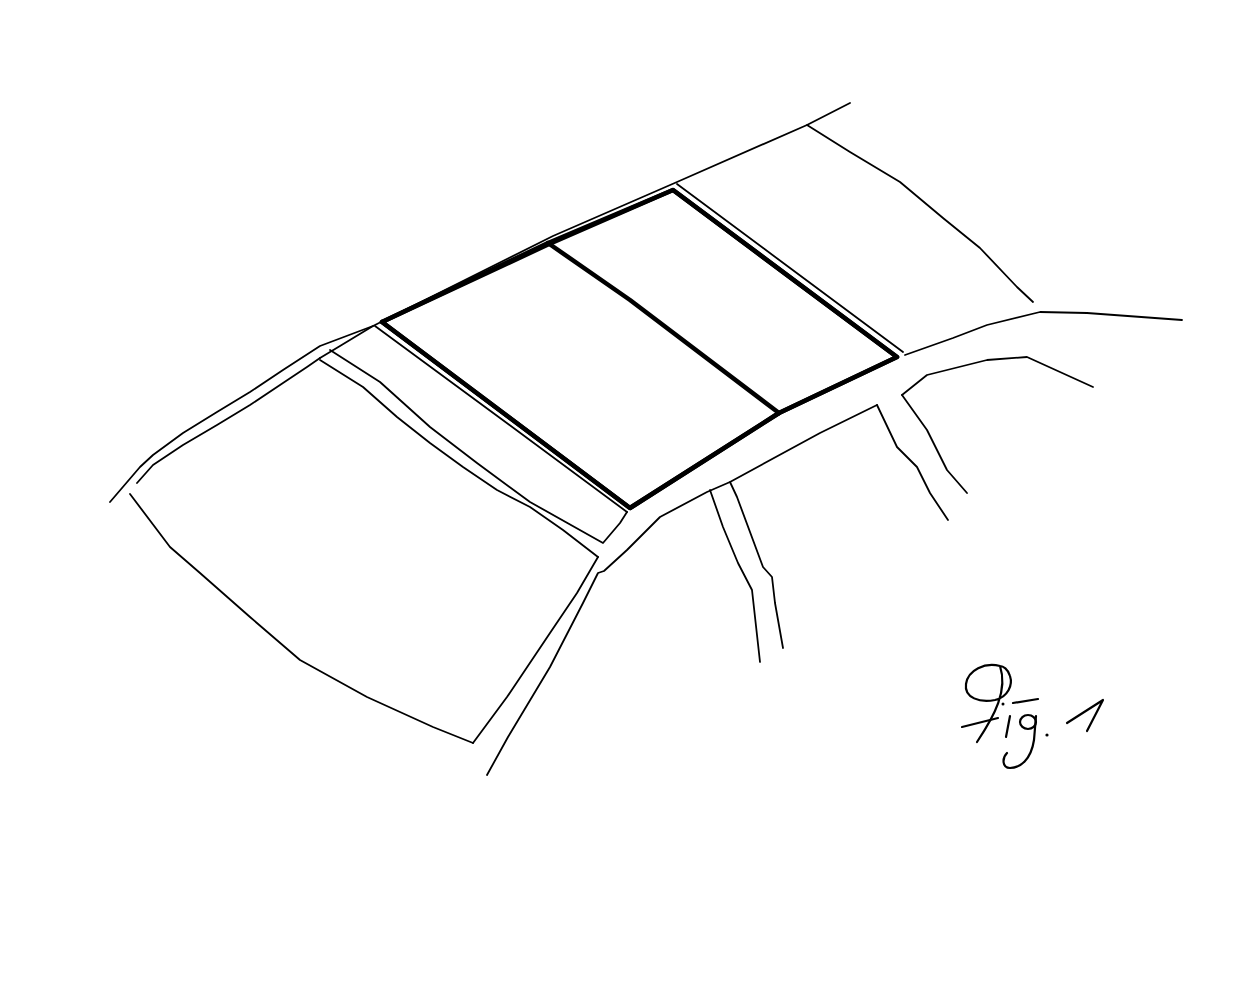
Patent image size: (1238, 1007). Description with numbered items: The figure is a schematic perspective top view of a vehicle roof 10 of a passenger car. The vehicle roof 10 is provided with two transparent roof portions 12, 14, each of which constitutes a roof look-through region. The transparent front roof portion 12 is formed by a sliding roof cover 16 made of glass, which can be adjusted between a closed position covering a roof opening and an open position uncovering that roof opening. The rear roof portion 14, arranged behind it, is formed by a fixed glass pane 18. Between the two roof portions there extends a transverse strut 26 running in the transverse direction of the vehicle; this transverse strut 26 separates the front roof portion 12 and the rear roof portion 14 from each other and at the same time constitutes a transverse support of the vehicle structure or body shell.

The vehicle roof 10 is at (457, 175).
The transparent front roof portion 12 is at (621, 349).
The rear roof portion 14 is at (639, 312).
The sliding roof cover 16 is at (590, 382).
The fixed glass pane 18 is at (737, 317).
The transverse strut 26 is at (663, 240).